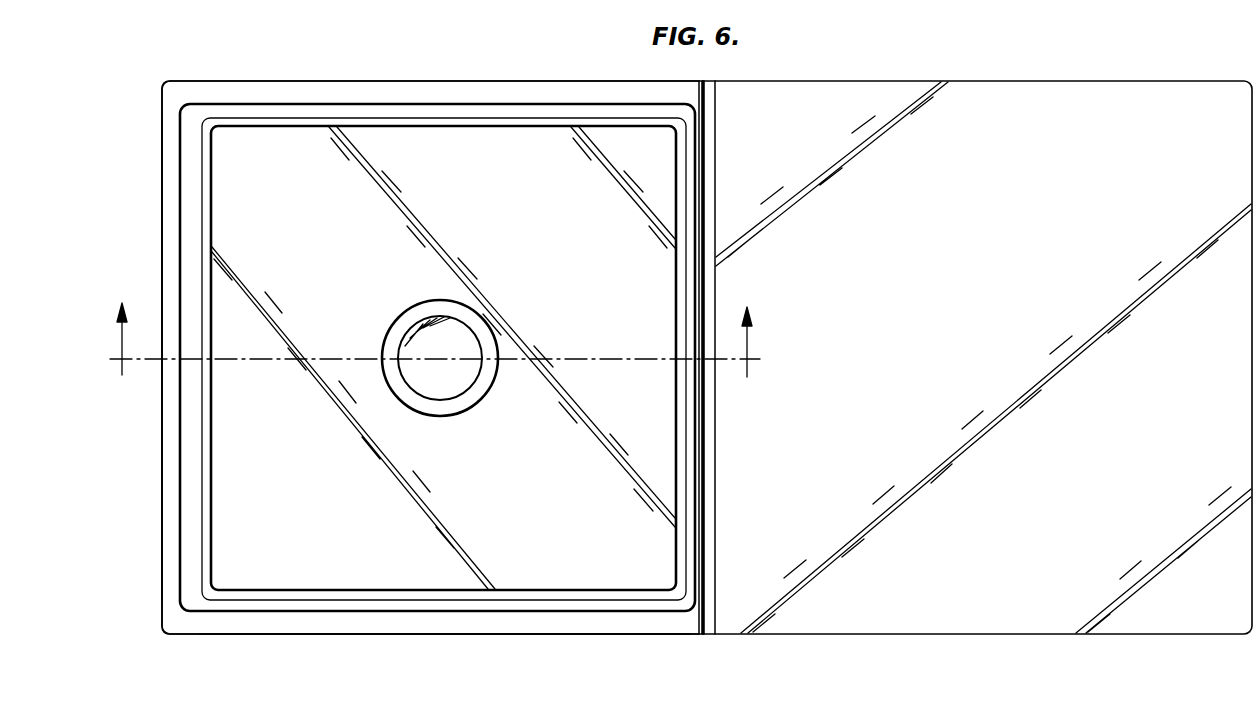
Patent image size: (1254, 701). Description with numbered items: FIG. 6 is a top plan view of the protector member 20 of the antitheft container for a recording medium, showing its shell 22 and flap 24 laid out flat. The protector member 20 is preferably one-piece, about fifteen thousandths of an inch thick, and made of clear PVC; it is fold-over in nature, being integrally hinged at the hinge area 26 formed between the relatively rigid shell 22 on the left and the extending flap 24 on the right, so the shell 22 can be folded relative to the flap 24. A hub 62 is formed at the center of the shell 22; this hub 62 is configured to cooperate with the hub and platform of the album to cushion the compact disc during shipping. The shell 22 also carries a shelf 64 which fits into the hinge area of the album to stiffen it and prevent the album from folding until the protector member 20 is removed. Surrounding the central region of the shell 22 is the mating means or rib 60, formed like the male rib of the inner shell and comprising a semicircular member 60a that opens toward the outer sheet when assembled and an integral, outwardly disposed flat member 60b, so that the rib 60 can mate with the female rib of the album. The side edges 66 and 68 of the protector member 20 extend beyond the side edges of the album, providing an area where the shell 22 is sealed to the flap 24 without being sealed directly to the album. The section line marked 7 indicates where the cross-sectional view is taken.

The protector member 20 is at (826, 672).
The shell 22 is at (373, 82).
The flap 24 is at (1012, 629).
The hinge area 26 is at (711, 622).
The rib 60 is at (431, 611).
The semicircular member 60a is at (607, 129).
The flat member 60b is at (490, 114).
The hub 62 is at (474, 408).
The shelf 64 is at (158, 597).
The side edge 66 is at (1040, 82).
The side edge 68 is at (570, 637).
The section line 7- 7 is at (430, 340).